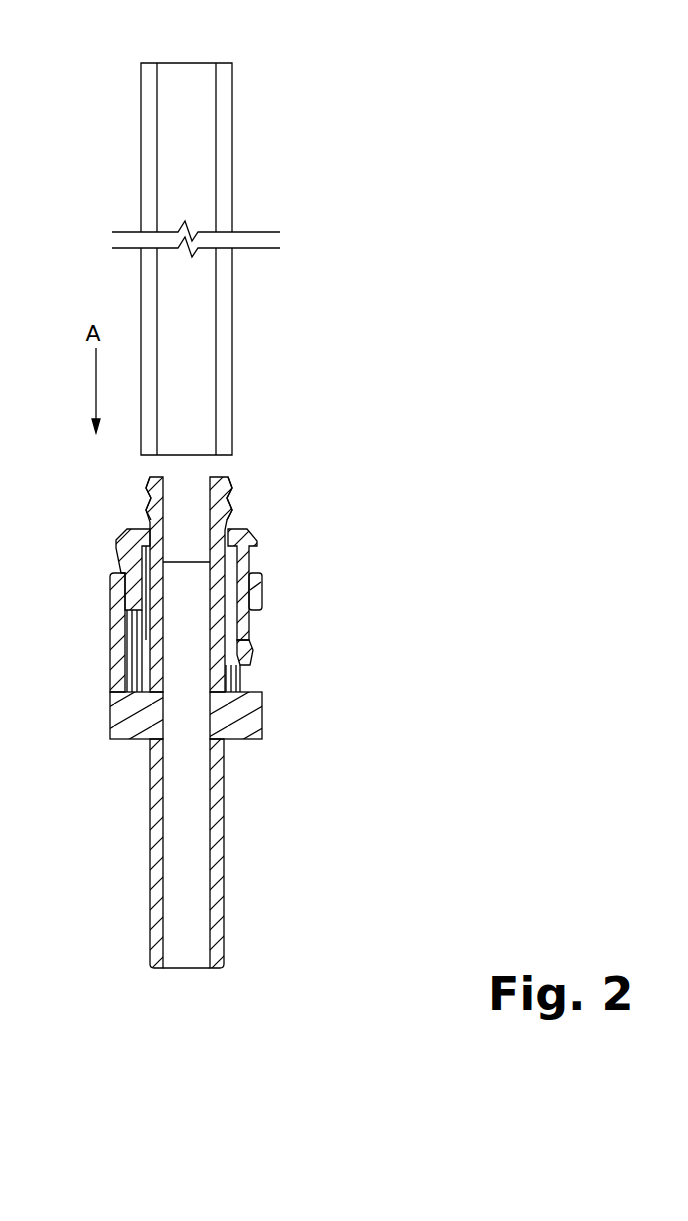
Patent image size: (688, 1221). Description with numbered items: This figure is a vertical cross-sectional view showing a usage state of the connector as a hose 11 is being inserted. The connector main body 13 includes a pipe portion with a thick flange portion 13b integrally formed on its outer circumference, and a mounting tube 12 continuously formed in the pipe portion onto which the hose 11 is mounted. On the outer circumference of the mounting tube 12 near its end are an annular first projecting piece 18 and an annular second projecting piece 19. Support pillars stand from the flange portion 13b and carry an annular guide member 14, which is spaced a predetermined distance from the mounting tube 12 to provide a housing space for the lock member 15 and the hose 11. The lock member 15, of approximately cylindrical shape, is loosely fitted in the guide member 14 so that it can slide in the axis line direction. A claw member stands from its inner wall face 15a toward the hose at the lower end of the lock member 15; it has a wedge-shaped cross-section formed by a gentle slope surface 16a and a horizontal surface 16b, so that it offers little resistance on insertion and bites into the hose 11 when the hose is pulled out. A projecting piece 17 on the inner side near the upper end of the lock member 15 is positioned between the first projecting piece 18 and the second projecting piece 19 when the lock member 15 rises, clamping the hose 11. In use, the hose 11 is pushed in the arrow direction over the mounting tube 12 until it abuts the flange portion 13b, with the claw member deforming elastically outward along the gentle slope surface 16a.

The hose 11 is at (225, 138).
The mounting tube 12 is at (186, 548).
The connector main body 13 is at (172, 770).
The flange portion 13b is at (263, 735).
The guide member 14 is at (255, 585).
The lock member 15 is at (203, 591).
The inner wall face 15a is at (138, 560).
The gentle slope surface 16a is at (245, 647).
The horizontal surface 16b is at (240, 672).
The projecting piece 17 is at (235, 533).
The first projecting piece 18 is at (147, 492).
The second projecting piece 19 is at (147, 522).